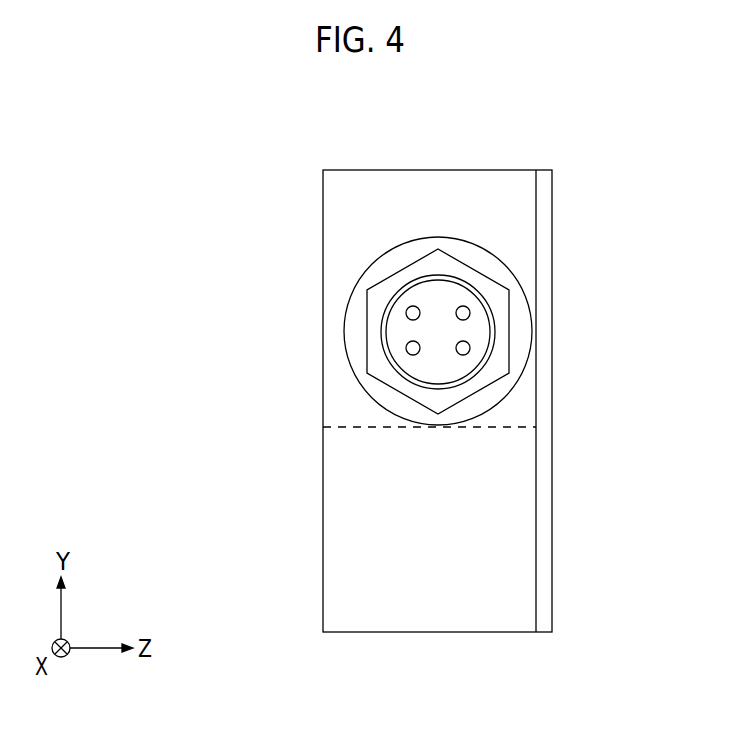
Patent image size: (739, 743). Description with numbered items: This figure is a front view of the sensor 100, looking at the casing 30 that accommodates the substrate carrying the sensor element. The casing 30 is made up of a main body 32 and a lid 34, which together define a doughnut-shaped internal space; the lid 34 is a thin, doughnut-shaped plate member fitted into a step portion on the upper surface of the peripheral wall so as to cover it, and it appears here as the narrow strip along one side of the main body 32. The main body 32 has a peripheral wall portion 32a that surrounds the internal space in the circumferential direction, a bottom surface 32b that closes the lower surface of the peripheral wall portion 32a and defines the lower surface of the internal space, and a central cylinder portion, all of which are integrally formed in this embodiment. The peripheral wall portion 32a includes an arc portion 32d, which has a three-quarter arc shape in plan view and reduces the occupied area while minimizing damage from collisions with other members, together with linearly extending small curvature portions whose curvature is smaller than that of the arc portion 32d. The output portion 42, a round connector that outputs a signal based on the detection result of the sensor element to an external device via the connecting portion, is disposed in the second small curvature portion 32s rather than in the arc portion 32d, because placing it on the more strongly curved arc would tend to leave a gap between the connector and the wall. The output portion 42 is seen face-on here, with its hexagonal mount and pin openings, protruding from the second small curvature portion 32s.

The sensor 100 is at (690, 118).
The casing 30 is at (436, 163).
The main body 32 is at (462, 638).
The peripheral wall portion 32a is at (396, 632).
The bottom surface 32b is at (325, 403).
The second small curvature portion 32s is at (412, 227).
The arc portion 32d is at (412, 540).
The lid 34 is at (545, 305).
The output portion 42 is at (385, 328).